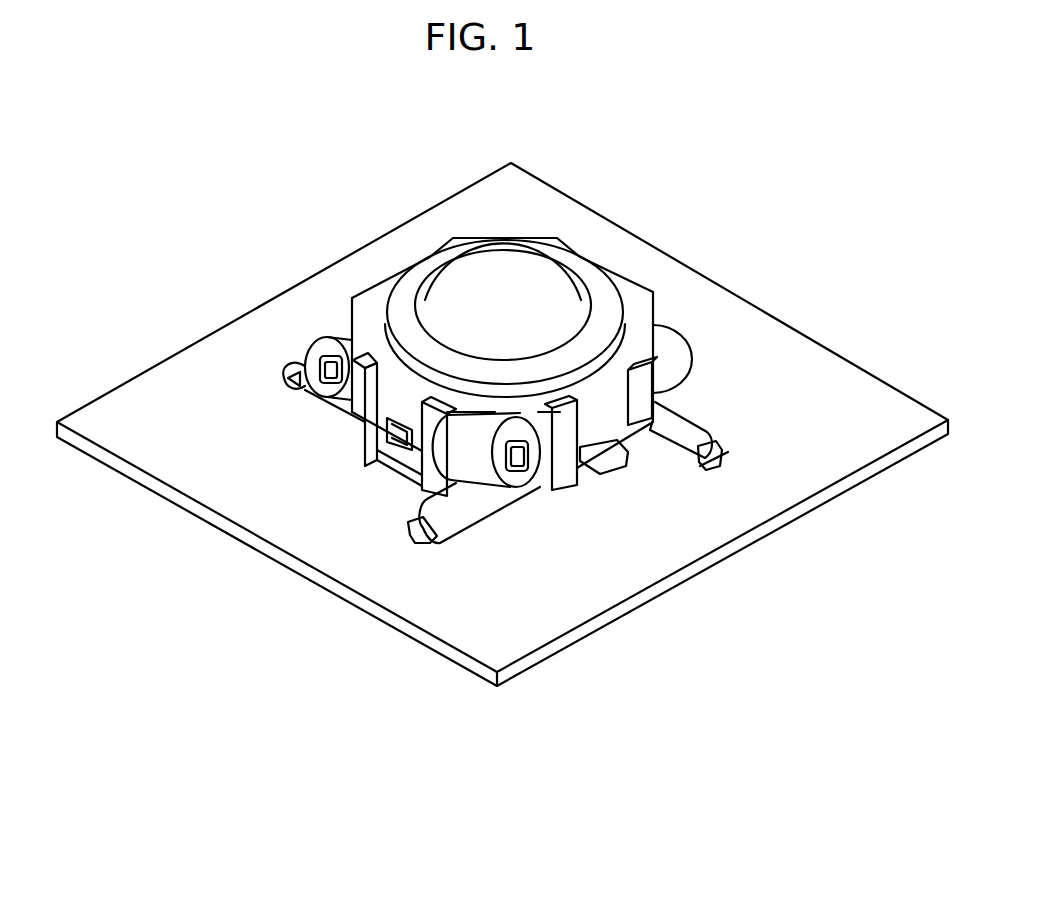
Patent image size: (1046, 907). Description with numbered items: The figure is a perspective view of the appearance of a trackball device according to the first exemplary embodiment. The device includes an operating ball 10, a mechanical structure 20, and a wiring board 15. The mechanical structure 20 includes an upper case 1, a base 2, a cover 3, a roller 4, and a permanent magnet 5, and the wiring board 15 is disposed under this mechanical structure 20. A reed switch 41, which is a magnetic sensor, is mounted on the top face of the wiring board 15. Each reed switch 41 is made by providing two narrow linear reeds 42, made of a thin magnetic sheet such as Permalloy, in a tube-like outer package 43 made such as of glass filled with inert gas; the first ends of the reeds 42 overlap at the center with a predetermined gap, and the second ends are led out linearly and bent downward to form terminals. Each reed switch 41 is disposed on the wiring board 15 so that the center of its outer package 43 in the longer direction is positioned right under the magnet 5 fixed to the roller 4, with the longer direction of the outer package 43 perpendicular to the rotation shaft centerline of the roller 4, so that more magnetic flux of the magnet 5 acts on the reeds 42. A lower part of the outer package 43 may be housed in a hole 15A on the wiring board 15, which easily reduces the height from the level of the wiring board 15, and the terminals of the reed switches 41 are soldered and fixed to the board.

The upper case 1 is at (628, 318).
The base 2 is at (607, 458).
The cover 3 is at (373, 297).
The roller 4 is at (318, 384).
The permanent magnet 5 is at (341, 336).
The operating ball 10 is at (540, 277).
The wiring board 15 is at (202, 382).
The hole 15A is at (720, 448).
The mechanical structure 20 is at (607, 255).
The reed switch 41 is at (303, 388).
The reed 42 is at (420, 545).
The outer package 43 is at (468, 515).